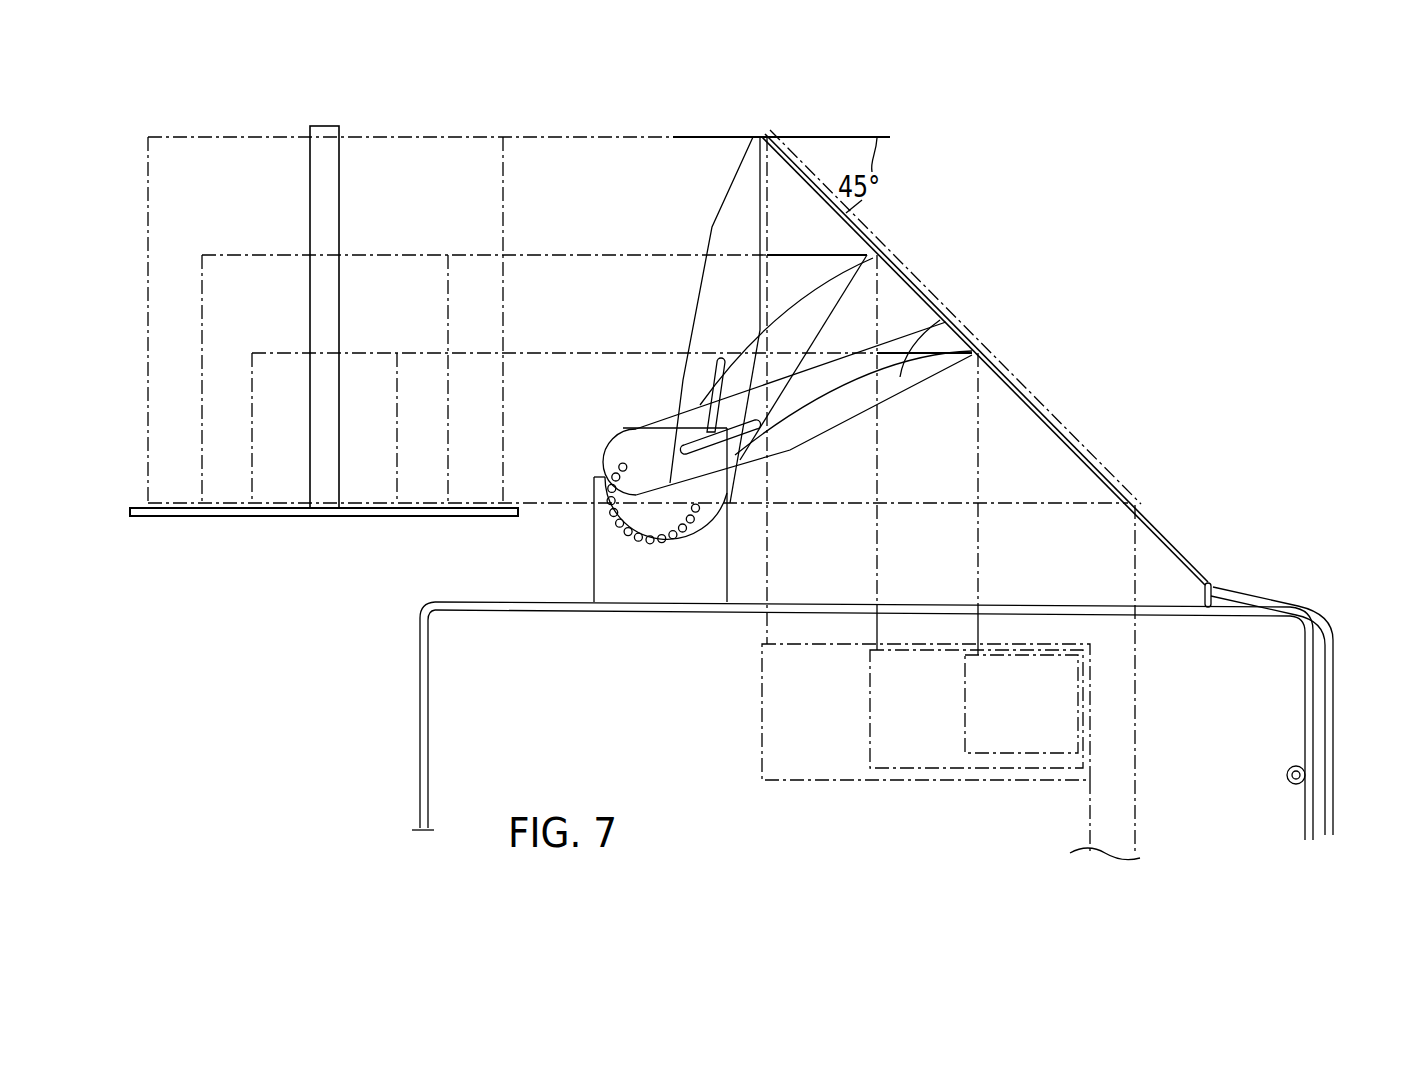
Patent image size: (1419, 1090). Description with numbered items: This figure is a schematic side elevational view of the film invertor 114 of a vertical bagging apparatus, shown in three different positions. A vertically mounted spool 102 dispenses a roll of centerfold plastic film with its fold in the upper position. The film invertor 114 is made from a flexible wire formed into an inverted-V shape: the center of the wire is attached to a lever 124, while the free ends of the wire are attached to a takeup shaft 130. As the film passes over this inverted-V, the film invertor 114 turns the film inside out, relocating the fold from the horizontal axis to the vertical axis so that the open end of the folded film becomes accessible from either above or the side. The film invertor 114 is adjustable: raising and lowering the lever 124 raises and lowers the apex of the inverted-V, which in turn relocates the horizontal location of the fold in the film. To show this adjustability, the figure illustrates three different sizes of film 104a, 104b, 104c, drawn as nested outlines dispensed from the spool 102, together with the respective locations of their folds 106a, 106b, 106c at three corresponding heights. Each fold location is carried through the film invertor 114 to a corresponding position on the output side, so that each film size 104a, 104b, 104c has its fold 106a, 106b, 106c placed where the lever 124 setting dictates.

The spool 102 is at (325, 124).
The film 104a is at (218, 207).
The film 104b is at (275, 306).
The film 104c is at (305, 387).
The fold 106a is at (553, 135).
The fold 106b is at (550, 253).
The fold 106c is at (553, 352).
The film invertor 114 is at (1172, 240).
The lever 124 is at (907, 350).
The takeup shaft 130 is at (1306, 776).